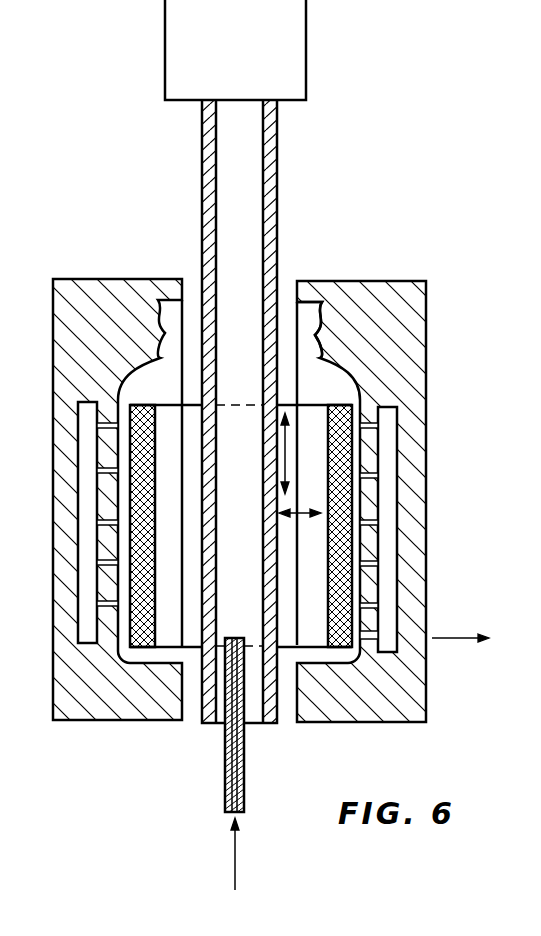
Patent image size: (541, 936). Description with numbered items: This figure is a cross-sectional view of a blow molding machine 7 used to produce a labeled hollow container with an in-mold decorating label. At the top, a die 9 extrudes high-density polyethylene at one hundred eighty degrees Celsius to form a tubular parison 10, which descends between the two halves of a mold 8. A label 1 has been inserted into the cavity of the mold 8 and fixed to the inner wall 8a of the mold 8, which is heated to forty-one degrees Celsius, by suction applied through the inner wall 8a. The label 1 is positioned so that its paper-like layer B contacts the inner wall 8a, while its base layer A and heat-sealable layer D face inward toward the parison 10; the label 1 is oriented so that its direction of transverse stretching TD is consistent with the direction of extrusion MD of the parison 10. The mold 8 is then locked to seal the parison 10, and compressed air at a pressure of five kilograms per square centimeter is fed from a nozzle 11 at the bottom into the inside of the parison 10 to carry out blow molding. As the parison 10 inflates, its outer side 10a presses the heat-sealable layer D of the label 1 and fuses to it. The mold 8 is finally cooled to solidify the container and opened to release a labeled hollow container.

The blow molding machine 7 is at (399, 189).
The die 9 is at (298, 48).
The parison 10 is at (233, 411).
The outer side of parison 10a is at (202, 197).
The mold 8 is at (417, 340).
The inner wall of mold 8a is at (350, 390).
The label 1 is at (330, 598).
The nozzle 11 is at (246, 773).
The heat-sealable layer D is at (153, 443).
The base layer A is at (131, 660).
The paper-like layer B is at (130, 582).
The direction of extrusion MD is at (286, 462).
The direction of transverse stretching TD is at (302, 520).